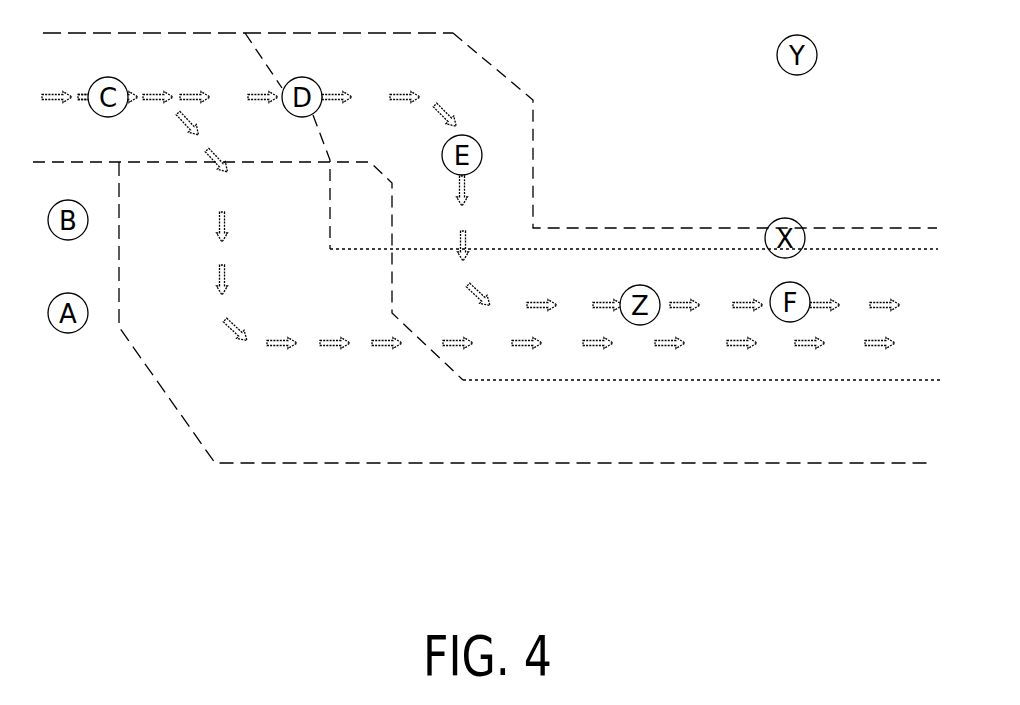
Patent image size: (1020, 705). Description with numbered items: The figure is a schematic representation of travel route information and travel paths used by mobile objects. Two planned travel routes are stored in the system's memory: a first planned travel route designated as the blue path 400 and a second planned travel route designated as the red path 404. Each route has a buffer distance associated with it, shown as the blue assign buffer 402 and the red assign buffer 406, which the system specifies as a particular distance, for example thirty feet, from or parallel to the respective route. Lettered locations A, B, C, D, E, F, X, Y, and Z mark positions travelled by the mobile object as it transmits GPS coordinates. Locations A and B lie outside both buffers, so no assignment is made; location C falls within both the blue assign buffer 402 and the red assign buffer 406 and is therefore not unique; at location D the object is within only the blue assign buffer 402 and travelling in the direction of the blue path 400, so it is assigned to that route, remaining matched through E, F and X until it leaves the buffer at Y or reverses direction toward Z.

The blue path 400 is at (454, 101).
The blue assign buffer 402 is at (540, 154).
The red path 404 is at (867, 334).
The red assign buffer 406 is at (629, 234).